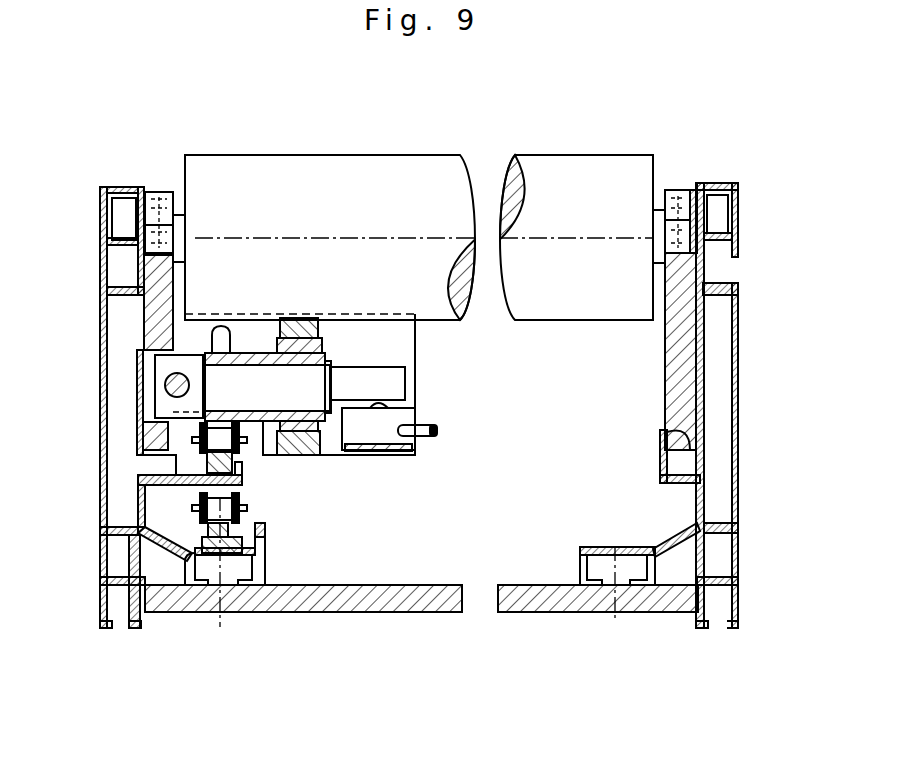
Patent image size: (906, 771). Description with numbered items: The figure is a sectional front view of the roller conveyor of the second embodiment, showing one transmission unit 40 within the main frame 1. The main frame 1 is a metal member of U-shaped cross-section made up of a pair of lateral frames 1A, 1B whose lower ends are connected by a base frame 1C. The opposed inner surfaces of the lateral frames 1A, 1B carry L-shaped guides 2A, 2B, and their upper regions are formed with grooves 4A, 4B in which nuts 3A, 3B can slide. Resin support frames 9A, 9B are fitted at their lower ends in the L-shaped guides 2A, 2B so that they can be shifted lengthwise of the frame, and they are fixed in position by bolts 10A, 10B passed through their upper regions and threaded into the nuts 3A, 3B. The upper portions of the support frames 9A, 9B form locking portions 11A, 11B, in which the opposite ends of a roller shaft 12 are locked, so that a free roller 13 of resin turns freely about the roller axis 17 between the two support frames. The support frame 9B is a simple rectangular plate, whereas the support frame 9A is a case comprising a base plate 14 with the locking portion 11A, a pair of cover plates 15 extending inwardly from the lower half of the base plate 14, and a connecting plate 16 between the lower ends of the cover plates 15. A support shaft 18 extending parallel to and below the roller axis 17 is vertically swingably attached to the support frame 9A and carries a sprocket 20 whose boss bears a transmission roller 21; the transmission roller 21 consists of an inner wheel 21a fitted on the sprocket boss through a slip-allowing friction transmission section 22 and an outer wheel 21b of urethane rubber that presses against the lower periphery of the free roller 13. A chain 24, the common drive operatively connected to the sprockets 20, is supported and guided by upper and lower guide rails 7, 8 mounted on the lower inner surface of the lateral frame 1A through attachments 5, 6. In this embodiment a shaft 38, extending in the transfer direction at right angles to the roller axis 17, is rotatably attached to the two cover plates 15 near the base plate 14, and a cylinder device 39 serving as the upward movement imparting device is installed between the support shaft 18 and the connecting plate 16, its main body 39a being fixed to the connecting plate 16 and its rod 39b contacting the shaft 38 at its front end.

The main frame 1 is at (109, 634).
The lateral frame 1A is at (100, 527).
The lateral frame 1B is at (732, 535).
The base frame 1C is at (440, 613).
The L-shaped guide 2A is at (150, 440).
The L-shaped guide 2B is at (672, 440).
The nut 3A is at (123, 217).
The nut 3B is at (715, 223).
The groove 4A is at (118, 200).
The groove 4B is at (728, 190).
The attachment 5 is at (184, 474).
The attachment 6 is at (190, 535).
The upper guide rail 7 is at (238, 468).
The lower guide rail 8 is at (226, 548).
The support frame 9A is at (138, 330).
The support frame 9B is at (666, 350).
The bolt 10A is at (175, 206).
The bolt 10B is at (683, 190).
The locking portion 11A is at (160, 191).
The locking portion 11B is at (693, 195).
The roller shaft 12 is at (660, 245).
The free roller 13 is at (428, 190).
The base plate 14 is at (160, 305).
The cover plates 15 is at (403, 347).
The connecting plate 16 is at (385, 452).
The roller axis 17 is at (358, 240).
The support shaft 18 is at (395, 388).
The sprocket 20 is at (222, 327).
The transmission roller 21 is at (295, 458).
The inner wheel 21a is at (312, 338).
The outer wheel 21b is at (297, 330).
The friction transmission section 22 is at (305, 457).
The chain 24 is at (244, 522).
The shaft 38 is at (168, 395).
The cylinder device 39 is at (422, 442).
The main body 39a is at (413, 456).
The rod 39b is at (380, 405).
The transmission unit 40 is at (359, 475).